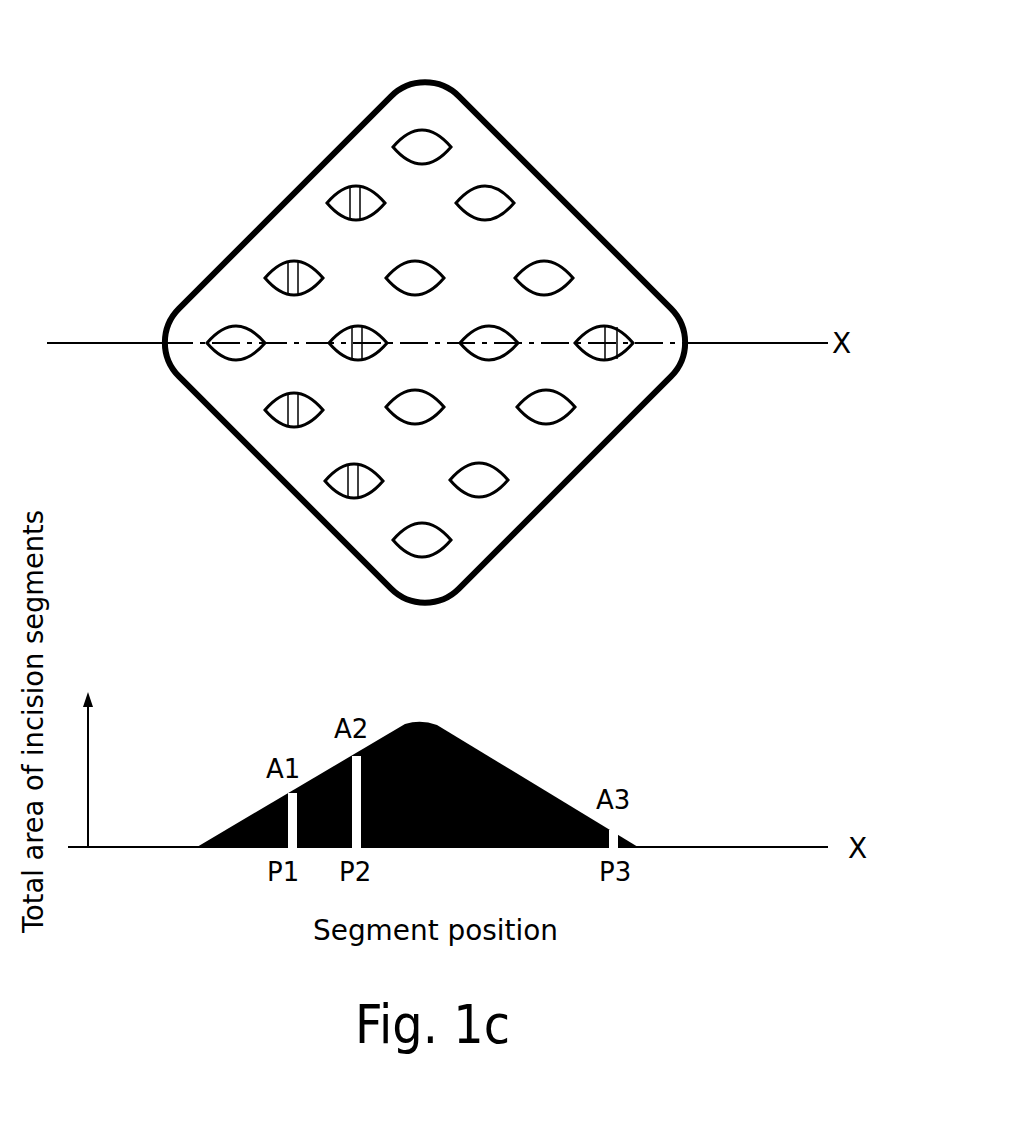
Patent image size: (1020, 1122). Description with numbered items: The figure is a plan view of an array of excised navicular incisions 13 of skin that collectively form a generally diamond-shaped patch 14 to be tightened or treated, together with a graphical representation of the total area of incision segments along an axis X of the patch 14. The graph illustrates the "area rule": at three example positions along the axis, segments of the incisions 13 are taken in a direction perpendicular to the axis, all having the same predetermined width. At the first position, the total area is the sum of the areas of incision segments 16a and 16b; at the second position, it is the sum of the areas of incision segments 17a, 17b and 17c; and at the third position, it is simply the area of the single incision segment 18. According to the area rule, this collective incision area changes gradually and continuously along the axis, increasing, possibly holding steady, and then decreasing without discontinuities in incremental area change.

The navicular incision 13 is at (430, 147).
The patch 14 is at (604, 213).
The incision segment 16a is at (272, 274).
The incision segment 16b is at (288, 427).
The incision segment 17a is at (350, 192).
The incision segment 17b is at (350, 333).
The incision segment 17c is at (350, 493).
The incision segment 18 is at (613, 352).